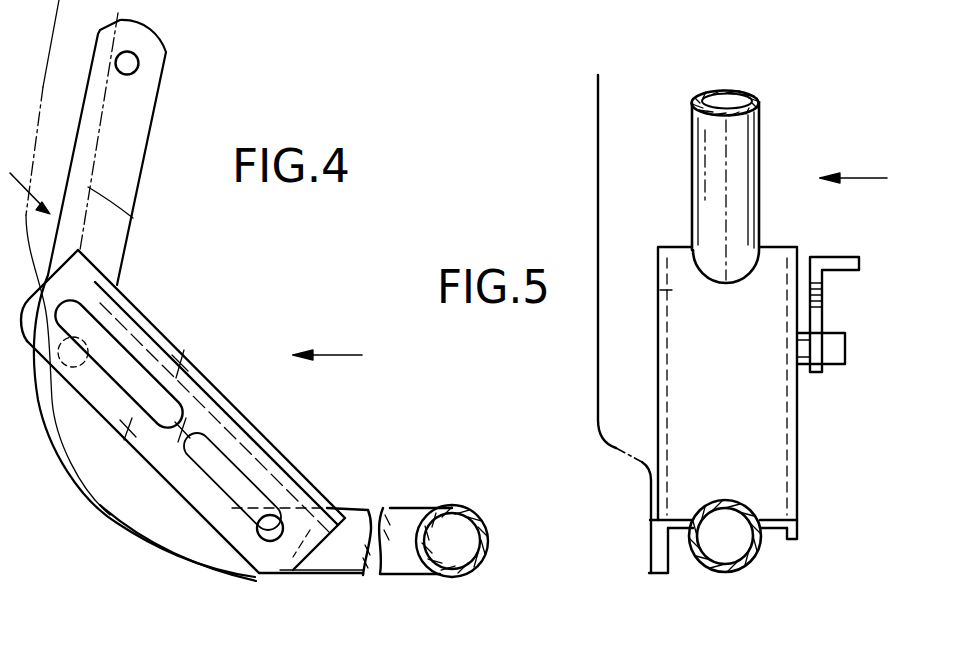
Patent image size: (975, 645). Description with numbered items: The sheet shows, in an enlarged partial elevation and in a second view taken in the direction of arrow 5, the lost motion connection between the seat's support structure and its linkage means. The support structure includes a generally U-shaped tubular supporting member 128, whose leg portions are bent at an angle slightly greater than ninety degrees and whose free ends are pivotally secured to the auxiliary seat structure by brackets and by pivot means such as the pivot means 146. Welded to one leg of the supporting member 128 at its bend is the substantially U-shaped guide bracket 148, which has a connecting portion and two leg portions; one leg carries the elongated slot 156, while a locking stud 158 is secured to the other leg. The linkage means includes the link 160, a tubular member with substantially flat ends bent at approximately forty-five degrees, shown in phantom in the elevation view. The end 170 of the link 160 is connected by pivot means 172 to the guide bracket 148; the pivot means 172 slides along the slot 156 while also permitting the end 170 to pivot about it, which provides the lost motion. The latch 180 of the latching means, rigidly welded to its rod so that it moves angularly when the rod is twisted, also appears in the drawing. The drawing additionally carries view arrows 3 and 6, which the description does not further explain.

In FIG. 4, the view direction arrow 3 is at (30, 192).
In FIG. 4, the arrow 5 is at (328, 355).
In FIG. 5, the section view arrow 6 is at (860, 178).
In FIG. 4, the tubular supporting member 128 is at (430, 577).
In FIG. 5, the tubular supporting member 128 is at (725, 90).
In FIG. 4, the pivot means 146 is at (139, 60).
In FIG. 4, the guide bracket 148 is at (240, 407).
In FIG. 5, the guide bracket 148 is at (797, 443).
In FIG. 4, the elongated slot 156 is at (133, 345).
In FIG. 4, the locking stud 158 is at (124, 391).
In FIG. 5, the locking stud 158 is at (846, 348).
In FIG. 4, the link 160 is at (133, 210).
In FIG. 5, the link 160 is at (598, 215).
In FIG. 4, the end of link 170 is at (297, 570).
In FIG. 4, the pivot means 172 is at (268, 512).
In FIG. 5, the latch 180 is at (837, 257).